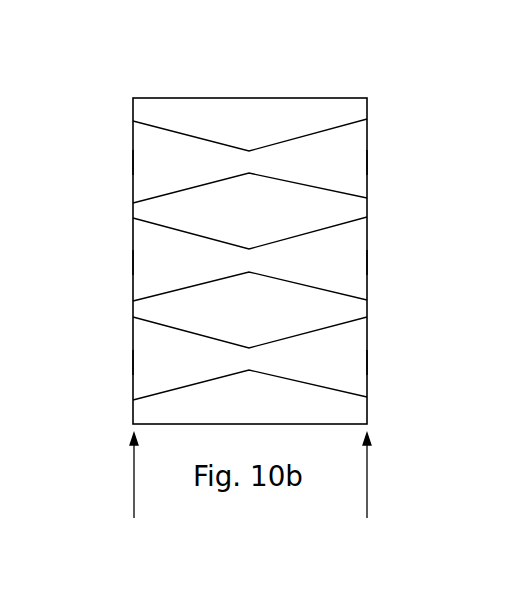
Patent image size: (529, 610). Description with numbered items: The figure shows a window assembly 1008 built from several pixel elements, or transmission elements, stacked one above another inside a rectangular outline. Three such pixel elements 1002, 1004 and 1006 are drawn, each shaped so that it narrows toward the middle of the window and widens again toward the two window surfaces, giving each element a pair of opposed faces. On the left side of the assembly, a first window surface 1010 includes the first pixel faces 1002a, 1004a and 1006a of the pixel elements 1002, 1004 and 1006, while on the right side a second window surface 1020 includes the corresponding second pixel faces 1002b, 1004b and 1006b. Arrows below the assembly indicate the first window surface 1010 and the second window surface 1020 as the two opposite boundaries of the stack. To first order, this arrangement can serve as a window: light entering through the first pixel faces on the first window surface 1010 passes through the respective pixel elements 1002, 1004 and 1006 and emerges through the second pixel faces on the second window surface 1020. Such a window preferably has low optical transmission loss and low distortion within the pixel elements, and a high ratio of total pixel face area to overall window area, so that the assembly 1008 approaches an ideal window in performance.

The layered stack structure 1008 is at (207, 112).
The pixel element 1002 is at (350, 174).
The pixel element 1004 is at (350, 272).
The pixel element 1006 is at (350, 372).
The first pixel face 1002a is at (133, 161).
The second pixel face 1002b is at (367, 162).
The first pixel face 1004a is at (133, 261).
The second pixel face 1004b is at (367, 261).
The first pixel face 1006a is at (133, 363).
The second pixel face 1006b is at (367, 361).
The first window surface 1010 is at (133, 494).
The second window surface 1020 is at (371, 494).